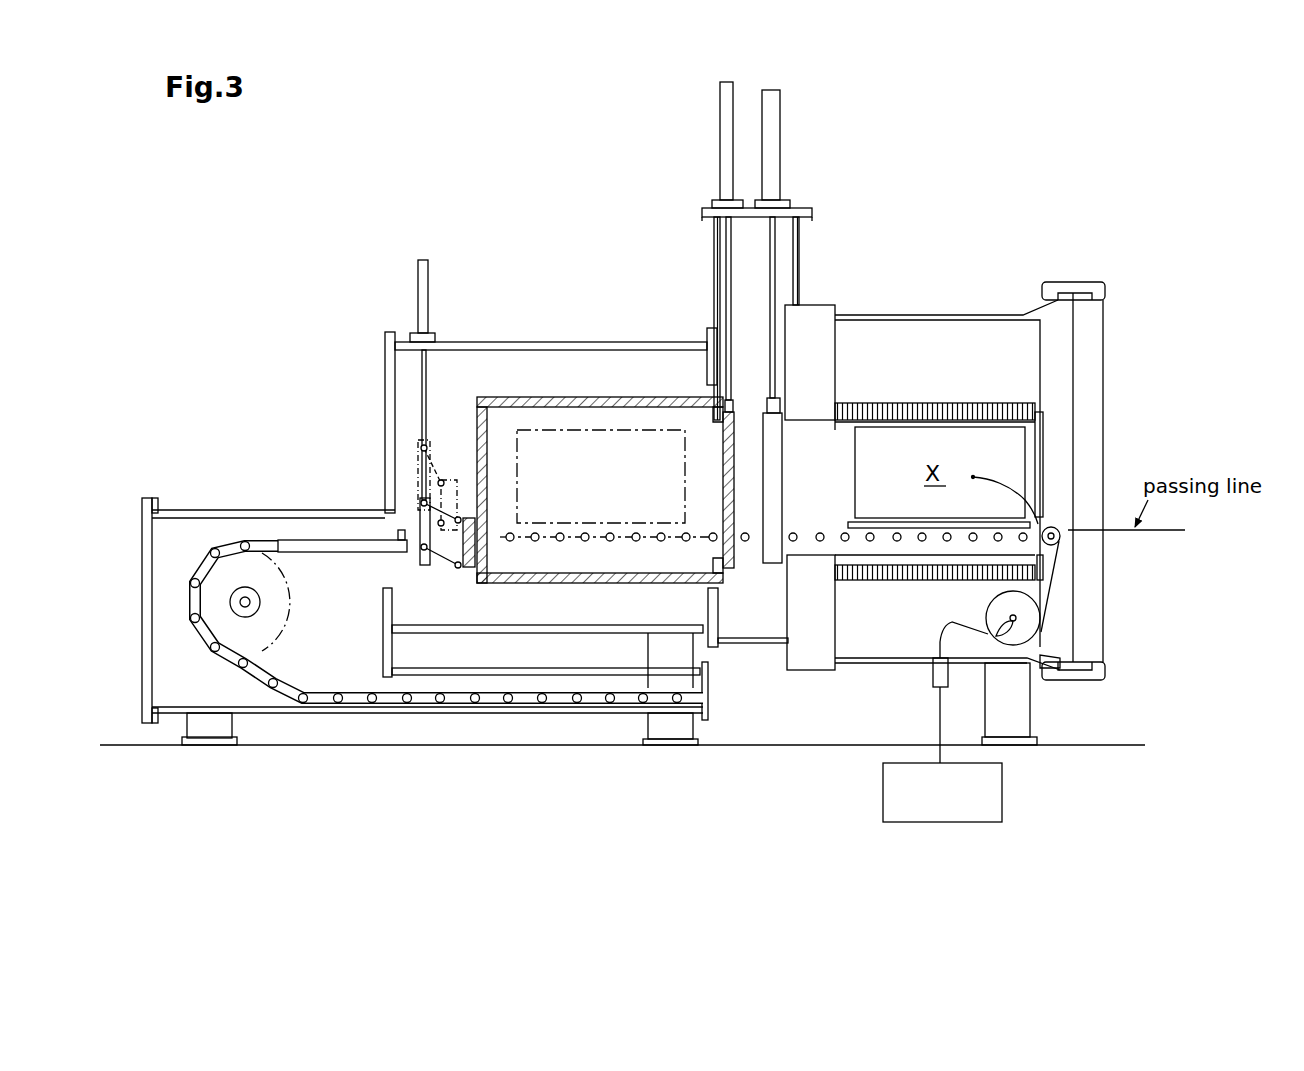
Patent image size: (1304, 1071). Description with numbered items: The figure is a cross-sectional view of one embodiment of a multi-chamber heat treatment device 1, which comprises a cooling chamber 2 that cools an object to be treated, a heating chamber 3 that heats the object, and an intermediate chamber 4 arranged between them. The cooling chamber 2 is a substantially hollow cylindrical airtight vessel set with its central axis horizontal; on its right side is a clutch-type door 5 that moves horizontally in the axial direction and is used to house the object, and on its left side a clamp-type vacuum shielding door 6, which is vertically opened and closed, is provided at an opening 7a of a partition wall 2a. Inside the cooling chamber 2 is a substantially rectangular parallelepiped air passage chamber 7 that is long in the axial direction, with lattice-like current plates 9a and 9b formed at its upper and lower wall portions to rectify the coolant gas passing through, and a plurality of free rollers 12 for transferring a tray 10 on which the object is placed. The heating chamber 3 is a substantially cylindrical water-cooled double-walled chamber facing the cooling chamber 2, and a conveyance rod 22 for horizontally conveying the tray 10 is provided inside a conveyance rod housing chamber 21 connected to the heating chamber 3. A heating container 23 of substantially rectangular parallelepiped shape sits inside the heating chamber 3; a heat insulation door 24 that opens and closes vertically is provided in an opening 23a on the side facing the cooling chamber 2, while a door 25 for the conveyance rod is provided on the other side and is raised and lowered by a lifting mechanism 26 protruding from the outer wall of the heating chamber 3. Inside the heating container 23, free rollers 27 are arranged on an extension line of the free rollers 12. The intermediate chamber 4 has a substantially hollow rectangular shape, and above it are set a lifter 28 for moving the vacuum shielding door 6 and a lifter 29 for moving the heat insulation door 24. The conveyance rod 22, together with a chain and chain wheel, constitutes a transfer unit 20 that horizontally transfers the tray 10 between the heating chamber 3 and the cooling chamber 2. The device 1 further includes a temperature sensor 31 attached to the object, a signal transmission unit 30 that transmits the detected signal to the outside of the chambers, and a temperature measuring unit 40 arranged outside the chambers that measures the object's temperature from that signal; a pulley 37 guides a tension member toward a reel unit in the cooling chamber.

The multi-chamber heat treatment device 1 is at (262, 262).
The cooling chamber 2 is at (935, 305).
The partition wall 2a is at (793, 585).
The heating chamber 3 is at (548, 337).
The intermediate chamber 4 is at (713, 268).
The clutch-type door 5 is at (1093, 402).
The vacuum shielding door 6 is at (775, 456).
The air passage chamber 7 is at (958, 393).
The opening 7a is at (822, 447).
The current plate 9a is at (920, 403).
The current plate 9b is at (882, 572).
The tray 10 is at (845, 522).
The free rollers 12 is at (945, 545).
The transfer unit 20 is at (178, 574).
The conveyance rod housing chamber 21 is at (233, 507).
The conveyance rod 22 is at (330, 540).
The heating container 23 is at (595, 395).
The opening 23a is at (705, 467).
The heat insulation door 24 is at (723, 520).
The door for conveyance rod 25 is at (463, 563).
The lifting mechanism 26 is at (412, 308).
The free rollers 27 is at (585, 545).
The lifter 28 is at (722, 168).
The lifter 29 is at (778, 182).
The signal transmission unit 30 is at (1055, 618).
The temperature sensor 31 is at (975, 477).
The pulley 37 is at (1060, 538).
The temperature measuring unit 40 is at (950, 806).